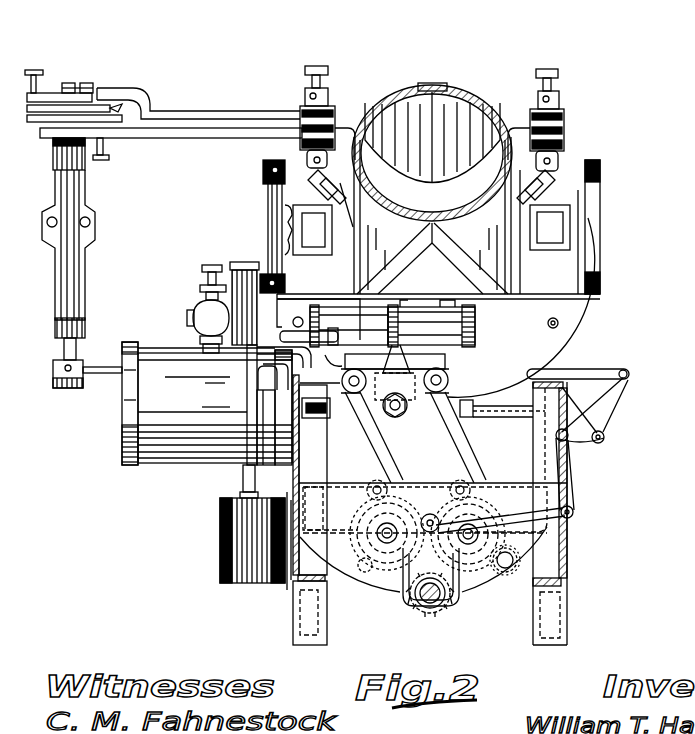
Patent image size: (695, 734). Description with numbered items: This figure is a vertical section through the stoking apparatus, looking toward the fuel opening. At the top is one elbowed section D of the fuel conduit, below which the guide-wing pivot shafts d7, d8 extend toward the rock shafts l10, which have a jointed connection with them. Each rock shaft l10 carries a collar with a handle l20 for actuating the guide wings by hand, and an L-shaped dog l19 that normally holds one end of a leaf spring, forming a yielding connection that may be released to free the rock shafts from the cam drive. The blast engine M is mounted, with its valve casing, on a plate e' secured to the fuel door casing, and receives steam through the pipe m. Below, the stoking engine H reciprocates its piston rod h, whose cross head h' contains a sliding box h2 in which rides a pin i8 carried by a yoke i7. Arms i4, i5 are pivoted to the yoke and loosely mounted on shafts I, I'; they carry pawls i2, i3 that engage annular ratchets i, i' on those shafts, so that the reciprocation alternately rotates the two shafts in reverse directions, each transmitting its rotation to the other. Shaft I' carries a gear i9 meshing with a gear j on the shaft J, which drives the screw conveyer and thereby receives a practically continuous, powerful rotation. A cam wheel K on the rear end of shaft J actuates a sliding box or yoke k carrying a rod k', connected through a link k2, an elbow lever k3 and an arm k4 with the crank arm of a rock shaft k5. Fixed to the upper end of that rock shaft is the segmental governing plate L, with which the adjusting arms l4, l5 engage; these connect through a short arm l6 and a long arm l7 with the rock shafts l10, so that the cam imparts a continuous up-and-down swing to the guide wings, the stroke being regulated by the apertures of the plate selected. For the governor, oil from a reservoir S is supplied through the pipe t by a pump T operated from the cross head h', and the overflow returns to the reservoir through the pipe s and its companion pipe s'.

The segmental governing plate L is at (76, 103).
The adjusting arm l4 is at (46, 95).
The adjusting arm l5 is at (52, 125).
The arm l6 is at (170, 116).
The arm l7 is at (180, 140).
The rock shaft l10 is at (304, 149).
The L-shaped dog l19 is at (328, 94).
The handle l20 is at (320, 66).
The guide wing pivot shaft d7 is at (316, 182).
The guide wing pivot shaft d8 is at (538, 183).
The fuel conduit section D is at (432, 165).
The rock shaft k5 is at (80, 300).
The motor cylinder H is at (207, 403).
The pump T is at (243, 309).
The blast engine M is at (392, 320).
The annular ratchet i' is at (324, 322).
The plate e' is at (430, 267).
The pipe s is at (267, 363).
The pipe s' is at (267, 415).
The pipe t is at (291, 371).
The pipe m is at (335, 368).
The yoke i7 is at (446, 362).
The arm k4 is at (575, 370).
The elbow lever k3 is at (612, 404).
The piston rod h is at (422, 419).
The sliding box h2 is at (410, 404).
The cross head h' is at (396, 404).
The arm i4 is at (370, 452).
The pin i8 is at (410, 425).
The arm i5 is at (468, 446).
The pawl i2 is at (400, 498).
The pawl i3 is at (448, 500).
The rod k' is at (500, 495).
The link k2 is at (575, 480).
The annular ratchet i is at (435, 568).
The shaft I is at (433, 545).
The sliding box k is at (421, 584).
The shaft J is at (410, 612).
The gear j is at (426, 615).
The cam wheel K is at (447, 610).
The shaft I' is at (486, 584).
The gear i9 is at (510, 568).
The reservoir S is at (236, 556).